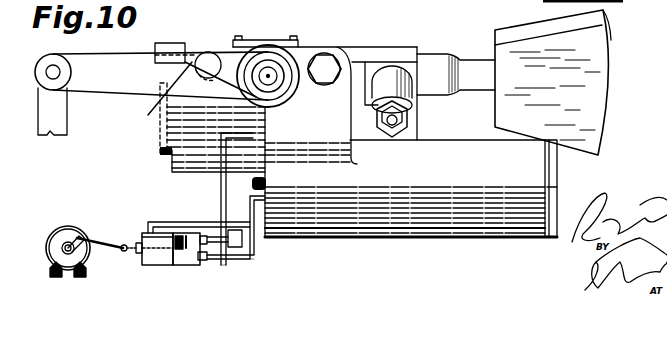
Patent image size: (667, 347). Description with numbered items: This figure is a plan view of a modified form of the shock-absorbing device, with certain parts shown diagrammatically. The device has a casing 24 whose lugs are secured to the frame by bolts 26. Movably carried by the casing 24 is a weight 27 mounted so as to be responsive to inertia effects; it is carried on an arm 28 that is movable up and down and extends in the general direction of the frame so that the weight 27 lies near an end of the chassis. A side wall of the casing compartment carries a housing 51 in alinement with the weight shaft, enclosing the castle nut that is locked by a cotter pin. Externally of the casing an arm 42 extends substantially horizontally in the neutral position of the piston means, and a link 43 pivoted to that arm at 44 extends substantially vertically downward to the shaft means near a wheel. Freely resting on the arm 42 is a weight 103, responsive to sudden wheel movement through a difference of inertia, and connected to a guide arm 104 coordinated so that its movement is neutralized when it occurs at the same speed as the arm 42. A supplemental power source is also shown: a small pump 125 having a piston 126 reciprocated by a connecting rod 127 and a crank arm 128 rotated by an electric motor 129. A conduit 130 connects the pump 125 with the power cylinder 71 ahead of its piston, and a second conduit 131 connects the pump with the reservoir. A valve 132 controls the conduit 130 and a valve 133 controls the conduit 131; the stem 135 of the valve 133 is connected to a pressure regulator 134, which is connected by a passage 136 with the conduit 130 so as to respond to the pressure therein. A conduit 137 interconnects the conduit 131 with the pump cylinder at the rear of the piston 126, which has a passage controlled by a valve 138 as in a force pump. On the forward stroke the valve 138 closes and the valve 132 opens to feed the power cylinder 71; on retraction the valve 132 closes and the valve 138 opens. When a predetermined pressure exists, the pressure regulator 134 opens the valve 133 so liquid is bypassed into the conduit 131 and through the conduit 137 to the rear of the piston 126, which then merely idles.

The pivot 44 is at (47, 71).
The link 43 is at (53, 125).
The arm 42 is at (100, 82).
The weight 103 is at (155, 46).
The arm 104 is at (153, 92).
The bolts 26 is at (208, 52).
The casing 24 is at (353, 57).
The arm 28 is at (441, 62).
The housing 51 is at (411, 95).
The weight 27 is at (605, 97).
The power cylinder 71 is at (393, 240).
The conduit 131 is at (221, 183).
The conduit 130 is at (243, 238).
The pressure regulator 134 is at (255, 250).
The stem 135 is at (224, 264).
The passage 136 is at (257, 260).
The valve 132 is at (200, 262).
The valve 133 is at (190, 235).
The conduit 137 is at (170, 214).
The valve 138 is at (137, 233).
The connecting rod 127 is at (113, 243).
The crank arm 128 is at (73, 237).
The electric motor 129 is at (55, 240).
The pump 125 is at (161, 246).
The piston 126 is at (178, 262).